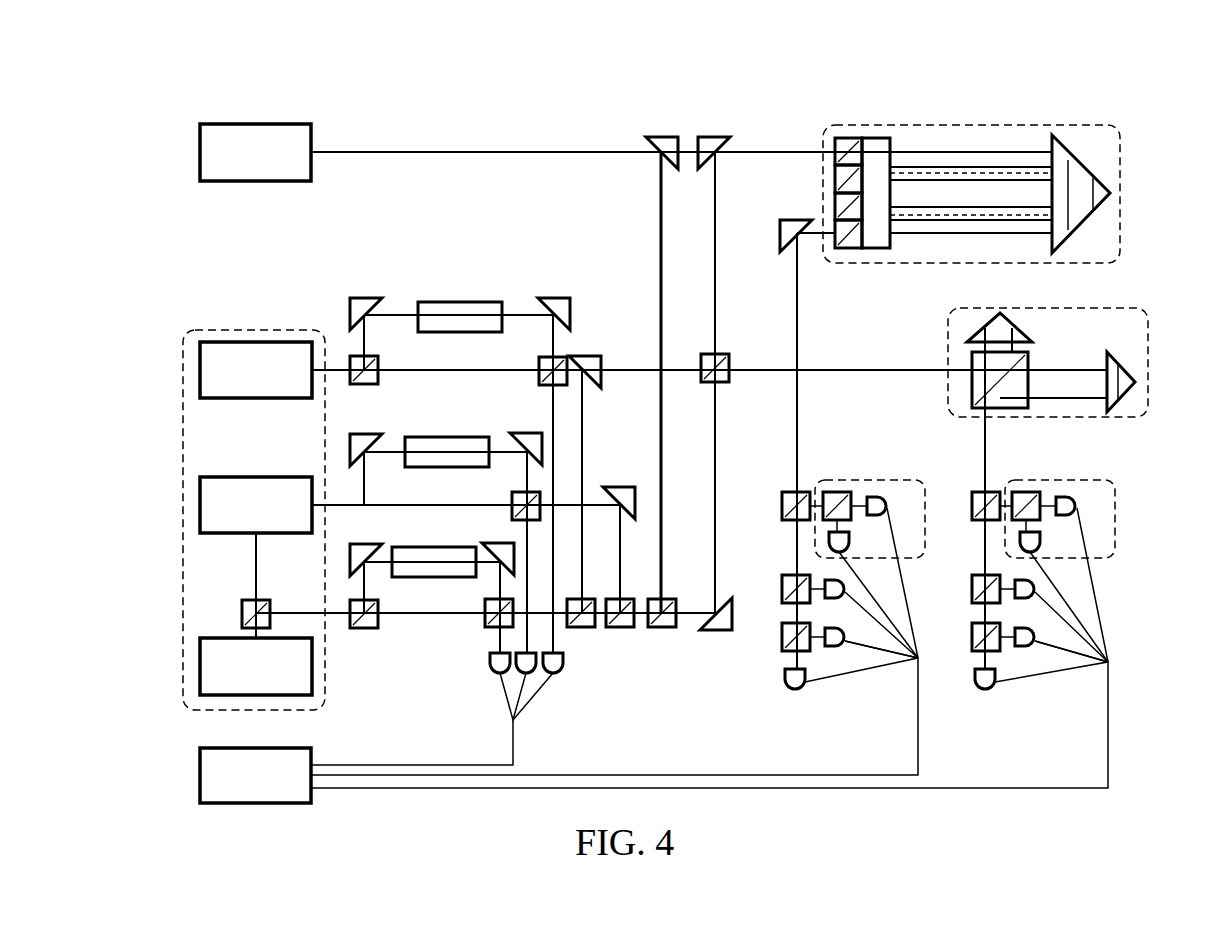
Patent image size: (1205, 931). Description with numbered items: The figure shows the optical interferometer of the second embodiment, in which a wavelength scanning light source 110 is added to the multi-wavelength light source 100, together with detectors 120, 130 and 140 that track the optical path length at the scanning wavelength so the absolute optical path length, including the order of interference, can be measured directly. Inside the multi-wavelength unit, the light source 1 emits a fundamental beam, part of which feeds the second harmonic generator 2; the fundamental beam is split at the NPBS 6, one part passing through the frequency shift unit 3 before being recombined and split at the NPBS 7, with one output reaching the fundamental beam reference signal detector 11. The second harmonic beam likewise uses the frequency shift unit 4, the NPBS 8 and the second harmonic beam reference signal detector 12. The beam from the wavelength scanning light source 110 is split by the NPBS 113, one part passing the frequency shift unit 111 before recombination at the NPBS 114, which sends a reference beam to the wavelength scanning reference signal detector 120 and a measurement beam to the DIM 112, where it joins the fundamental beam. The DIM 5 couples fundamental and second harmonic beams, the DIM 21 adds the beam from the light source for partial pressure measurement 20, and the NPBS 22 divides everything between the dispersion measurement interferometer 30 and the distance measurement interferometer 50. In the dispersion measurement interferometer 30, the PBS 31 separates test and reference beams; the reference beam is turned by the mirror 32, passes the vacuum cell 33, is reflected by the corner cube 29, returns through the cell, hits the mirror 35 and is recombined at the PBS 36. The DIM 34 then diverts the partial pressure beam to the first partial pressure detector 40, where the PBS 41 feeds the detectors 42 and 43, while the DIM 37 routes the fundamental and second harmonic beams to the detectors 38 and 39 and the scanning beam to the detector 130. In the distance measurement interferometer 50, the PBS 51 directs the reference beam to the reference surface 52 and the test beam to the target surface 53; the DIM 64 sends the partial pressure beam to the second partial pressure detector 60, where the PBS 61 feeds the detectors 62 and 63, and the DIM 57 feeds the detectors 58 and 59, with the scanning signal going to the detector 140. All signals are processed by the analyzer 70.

The light source 1 is at (232, 652).
The second harmonic generator 2 is at (222, 492).
The frequency shift unit 3 is at (434, 566).
The frequency shift unit for second harmonic beam 4 is at (440, 456).
The dichroic mirror 5 is at (628, 628).
The non-polarization beam splitter 6 is at (372, 628).
The non-polarization beam splitter 7 is at (492, 628).
The non-polarization beam splitter 8 is at (516, 504).
The fundamental beam reference signal detector 11 is at (494, 676).
The second harmonic beam reference signal detector 12 is at (521, 676).
The light source for partial pressure measurement 20 is at (292, 150).
The dichroic mirror 21 is at (668, 628).
The non-polarization beam splitter 22 is at (714, 354).
The corner cube 29 is at (1068, 200).
The dispersion measurement interferometer 30 is at (971, 181).
The polarization beam splitter 31 is at (846, 140).
The mirror 32 is at (846, 178).
The vacuum cell 33 is at (948, 210).
The dichroic mirror 34 is at (790, 494).
The mirror 35 is at (842, 206).
The polarization beam splitter 36 is at (836, 232).
The dichroic mirror 37 is at (790, 576).
The detector 38 is at (845, 598).
The detector 39 is at (800, 688).
The first partial pressure detector 40 is at (832, 486).
The polarization beam splitter 41 is at (834, 492).
The detector 42 is at (884, 512).
The detector 43 is at (848, 552).
The distance measurement interferometer 50 is at (1048, 352).
The polarization beam splitter 51 is at (1034, 358).
The reference surface 52 is at (1002, 338).
The target surface 53 is at (1128, 392).
The dichroic mirror 57 is at (982, 576).
The detector 58 is at (1035, 598).
The detector 59 is at (990, 688).
The second partial pressure detector 60 is at (1022, 486).
The polarization beam splitter 61 is at (1024, 492).
The detector 62 is at (1074, 512).
The detector 63 is at (1038, 552).
The dichroic mirror 64 is at (980, 494).
The analyzer 70 is at (288, 778).
The multi-wavelength light source 100 is at (232, 366).
The wavelength scanning light source 110 is at (195, 340).
The frequency shift unit 111 is at (456, 326).
The dichroic mirror 112 is at (584, 628).
The non-polarization beam splitter 113 is at (352, 358).
The non-polarization beam splitter 114 is at (562, 358).
The wavelength scanning reference signal detector 120 is at (560, 676).
The detector 130 is at (838, 656).
The detector 140 is at (1028, 656).